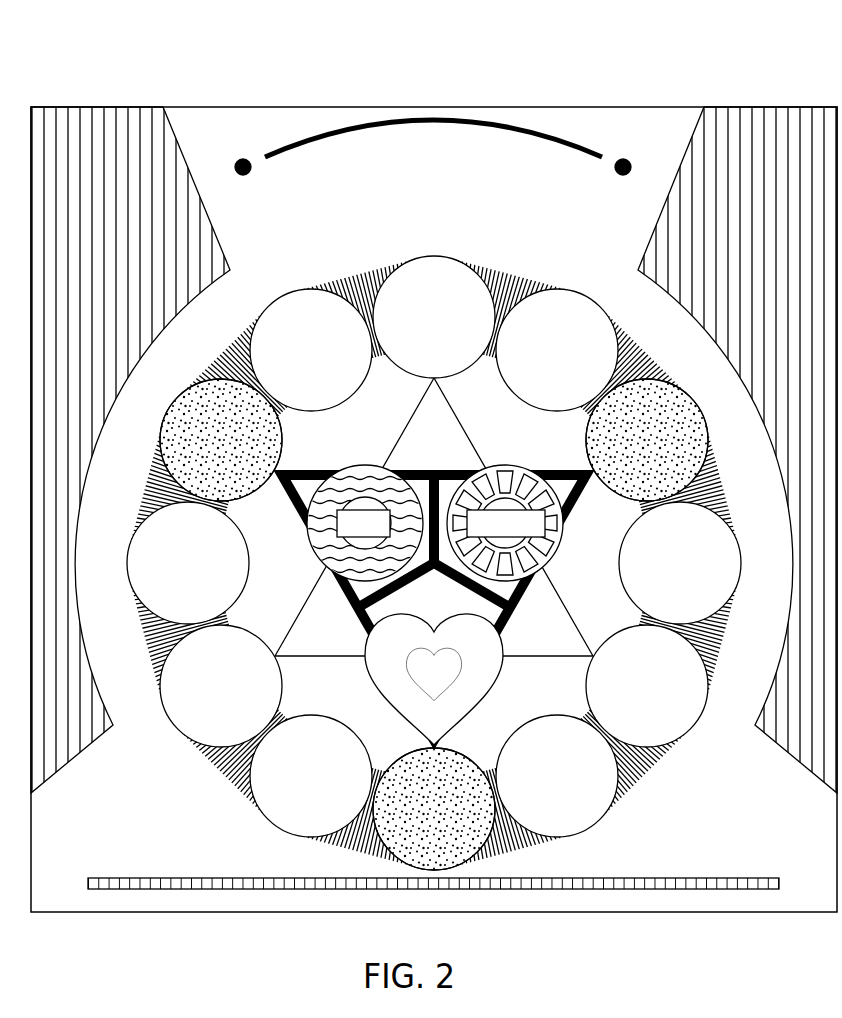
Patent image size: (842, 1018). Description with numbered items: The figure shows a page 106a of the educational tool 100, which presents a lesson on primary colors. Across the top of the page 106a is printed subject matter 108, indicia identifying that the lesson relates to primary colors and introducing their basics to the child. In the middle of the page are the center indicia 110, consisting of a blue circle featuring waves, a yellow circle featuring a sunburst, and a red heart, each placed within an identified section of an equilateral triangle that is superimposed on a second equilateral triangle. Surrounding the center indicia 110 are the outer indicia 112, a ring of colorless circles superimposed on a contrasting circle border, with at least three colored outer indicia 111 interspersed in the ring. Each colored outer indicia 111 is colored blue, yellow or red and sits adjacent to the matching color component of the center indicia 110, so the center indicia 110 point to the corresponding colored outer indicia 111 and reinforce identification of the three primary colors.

The educational tool 100 is at (734, 66).
The printed subject matter 108 is at (466, 92).
The center indicia 110 is at (378, 456).
The colored outer indicia 111 is at (173, 437).
The outer indicia 112 is at (197, 765).
The page 106a is at (752, 866).